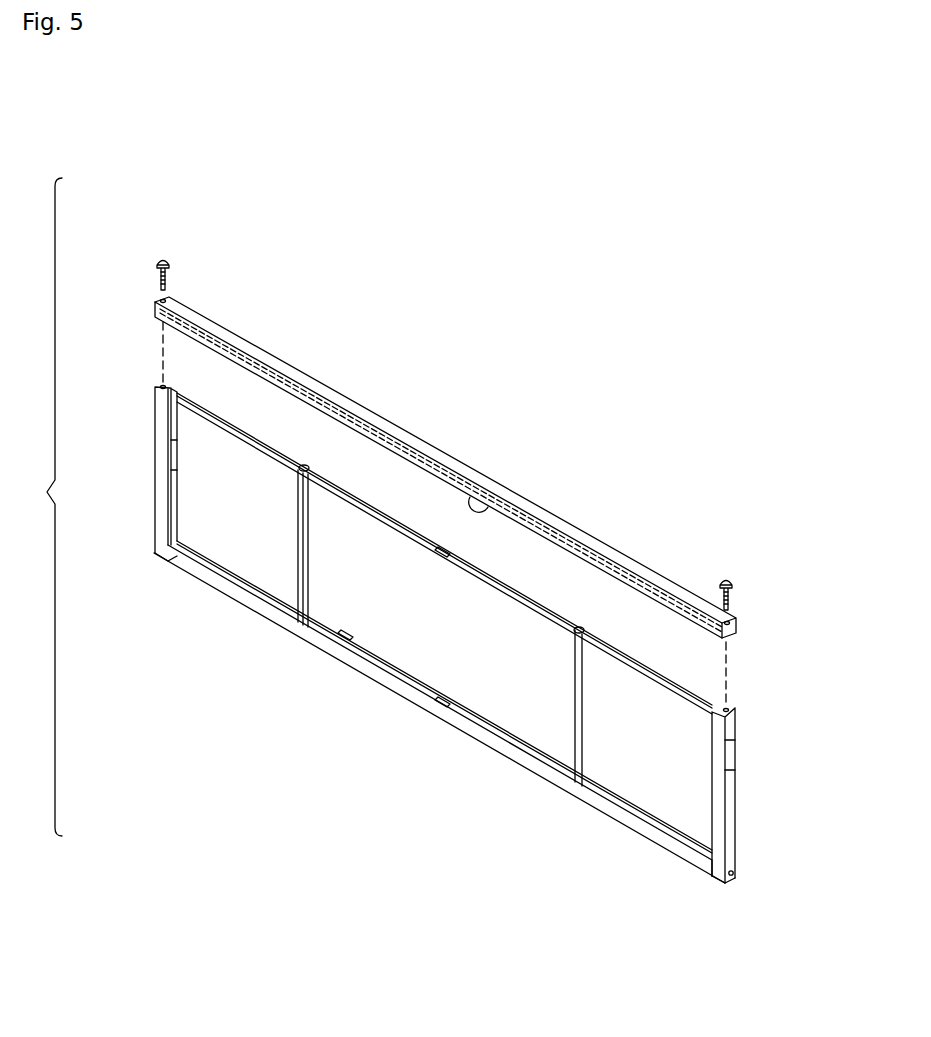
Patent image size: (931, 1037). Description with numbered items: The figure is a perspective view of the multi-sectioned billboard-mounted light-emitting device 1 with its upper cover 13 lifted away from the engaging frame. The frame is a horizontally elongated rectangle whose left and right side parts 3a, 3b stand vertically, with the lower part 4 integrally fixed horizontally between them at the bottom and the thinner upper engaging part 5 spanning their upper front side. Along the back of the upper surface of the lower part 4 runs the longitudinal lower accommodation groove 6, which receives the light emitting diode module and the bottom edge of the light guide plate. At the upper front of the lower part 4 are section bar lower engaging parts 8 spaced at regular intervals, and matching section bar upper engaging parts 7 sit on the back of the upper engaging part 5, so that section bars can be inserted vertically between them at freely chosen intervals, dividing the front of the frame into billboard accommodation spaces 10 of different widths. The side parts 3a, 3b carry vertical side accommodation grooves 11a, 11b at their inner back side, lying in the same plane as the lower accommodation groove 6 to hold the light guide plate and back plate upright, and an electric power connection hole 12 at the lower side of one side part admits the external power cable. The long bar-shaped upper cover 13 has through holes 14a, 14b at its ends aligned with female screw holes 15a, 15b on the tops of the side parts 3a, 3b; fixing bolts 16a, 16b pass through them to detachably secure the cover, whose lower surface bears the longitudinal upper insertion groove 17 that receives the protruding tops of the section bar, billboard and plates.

The glass railing assembly 1 is at (45, 507).
The side part 3a is at (160, 510).
The side part 3b is at (732, 772).
The lower part 4 is at (218, 582).
The upper engaging part 5 is at (208, 428).
The lower accommodation groove 6 is at (340, 630).
The section bar upper engaging part 7 is at (432, 540).
The section bar lower engaging part 8 is at (435, 695).
The billboard accommodation space 10 is at (630, 765).
The side accommodation groove 11a is at (170, 465).
The side accommodation groove 11b is at (730, 706).
The electric power connection hole 12 is at (735, 874).
The upper cover 13 is at (452, 458).
The through hole 14a is at (158, 298).
The through hole 14b is at (731, 620).
The female screw hole 15a is at (160, 384).
The female screw hole 15b is at (737, 712).
The fixing bolt 16a is at (172, 264).
The fixing bolt 16b is at (726, 580).
The upper insertion groove 17 is at (478, 500).